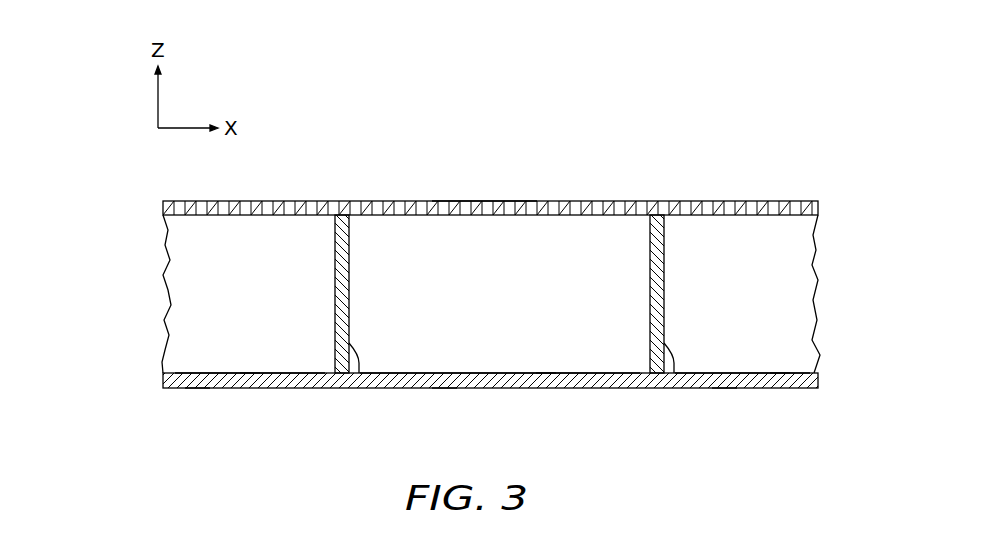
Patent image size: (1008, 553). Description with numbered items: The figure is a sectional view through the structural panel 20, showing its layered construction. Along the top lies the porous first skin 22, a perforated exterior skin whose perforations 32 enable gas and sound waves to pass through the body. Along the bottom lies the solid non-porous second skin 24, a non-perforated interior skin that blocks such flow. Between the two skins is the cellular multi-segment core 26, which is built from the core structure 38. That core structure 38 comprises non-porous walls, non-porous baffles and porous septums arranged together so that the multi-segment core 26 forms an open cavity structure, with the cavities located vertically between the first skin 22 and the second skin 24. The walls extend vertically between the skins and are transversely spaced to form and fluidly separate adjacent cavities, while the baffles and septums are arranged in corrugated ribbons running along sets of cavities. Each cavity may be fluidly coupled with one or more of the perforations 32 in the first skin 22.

The structural panel 20 is at (673, 167).
The porous first skin 22 is at (156, 204).
The solid non-porous second skin 24 is at (156, 388).
The cellular multi-segment core 26 is at (100, 294).
The perforations 32 is at (537, 200).
The core structure 38 is at (130, 213).